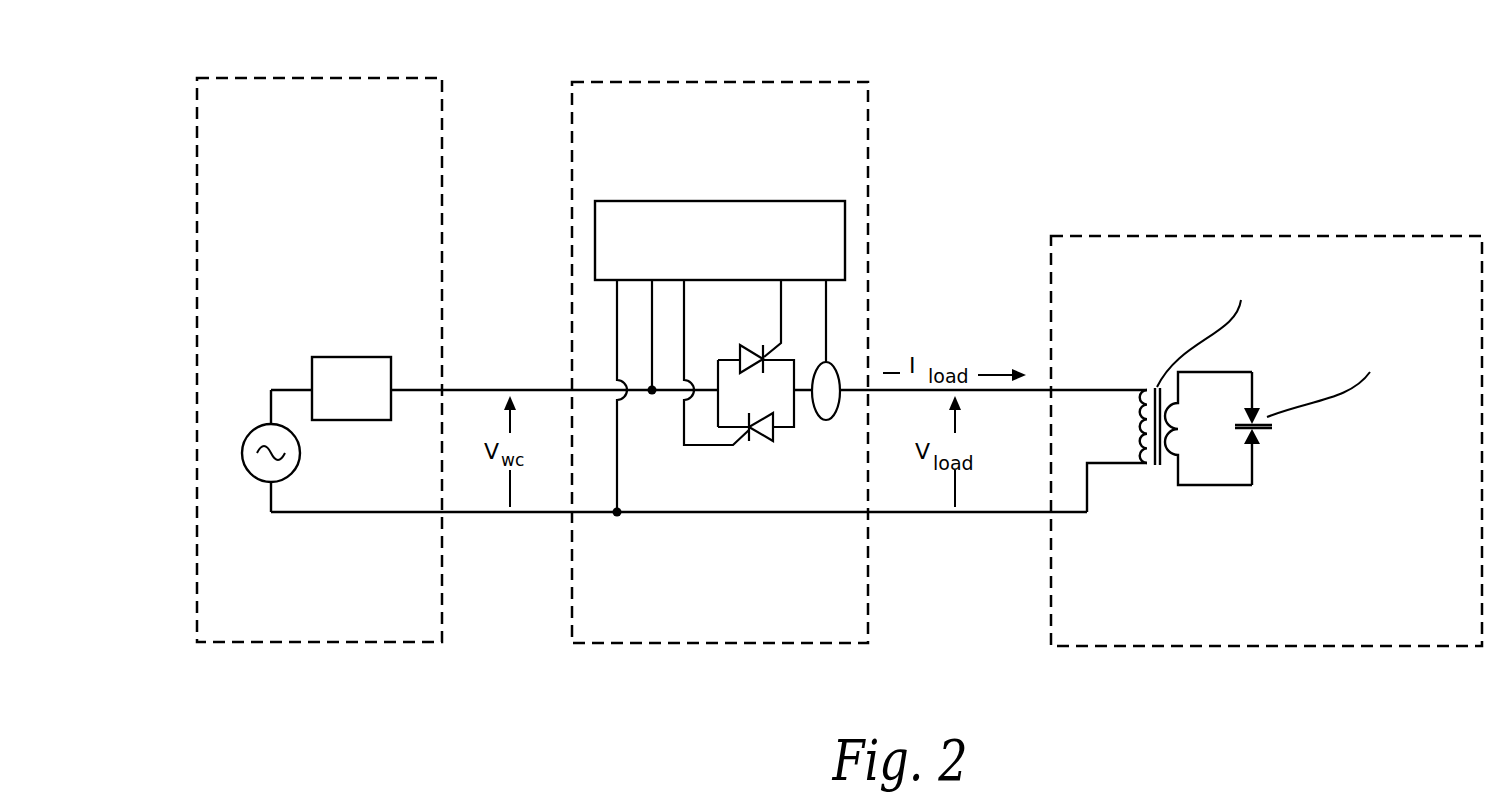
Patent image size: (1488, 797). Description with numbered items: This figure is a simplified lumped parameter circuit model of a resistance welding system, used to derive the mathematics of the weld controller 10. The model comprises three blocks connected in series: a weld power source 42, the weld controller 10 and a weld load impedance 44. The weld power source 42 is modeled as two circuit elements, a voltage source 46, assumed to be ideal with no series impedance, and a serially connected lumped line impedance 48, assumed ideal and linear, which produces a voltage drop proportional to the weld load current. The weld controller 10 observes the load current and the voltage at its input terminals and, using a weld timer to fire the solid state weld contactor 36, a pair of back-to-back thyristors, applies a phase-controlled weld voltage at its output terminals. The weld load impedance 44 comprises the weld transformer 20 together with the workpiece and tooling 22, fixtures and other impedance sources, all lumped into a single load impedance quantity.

The weld controller 10 is at (748, 338).
The weld transformer 20 is at (1155, 263).
The tooling 22 is at (1267, 437).
The solid state weld contactor 36 is at (780, 435).
The weld power source 42 is at (425, 160).
The weld load impedance 44 is at (1266, 406).
The voltage source 46 is at (253, 478).
The line impedance 48 is at (352, 357).